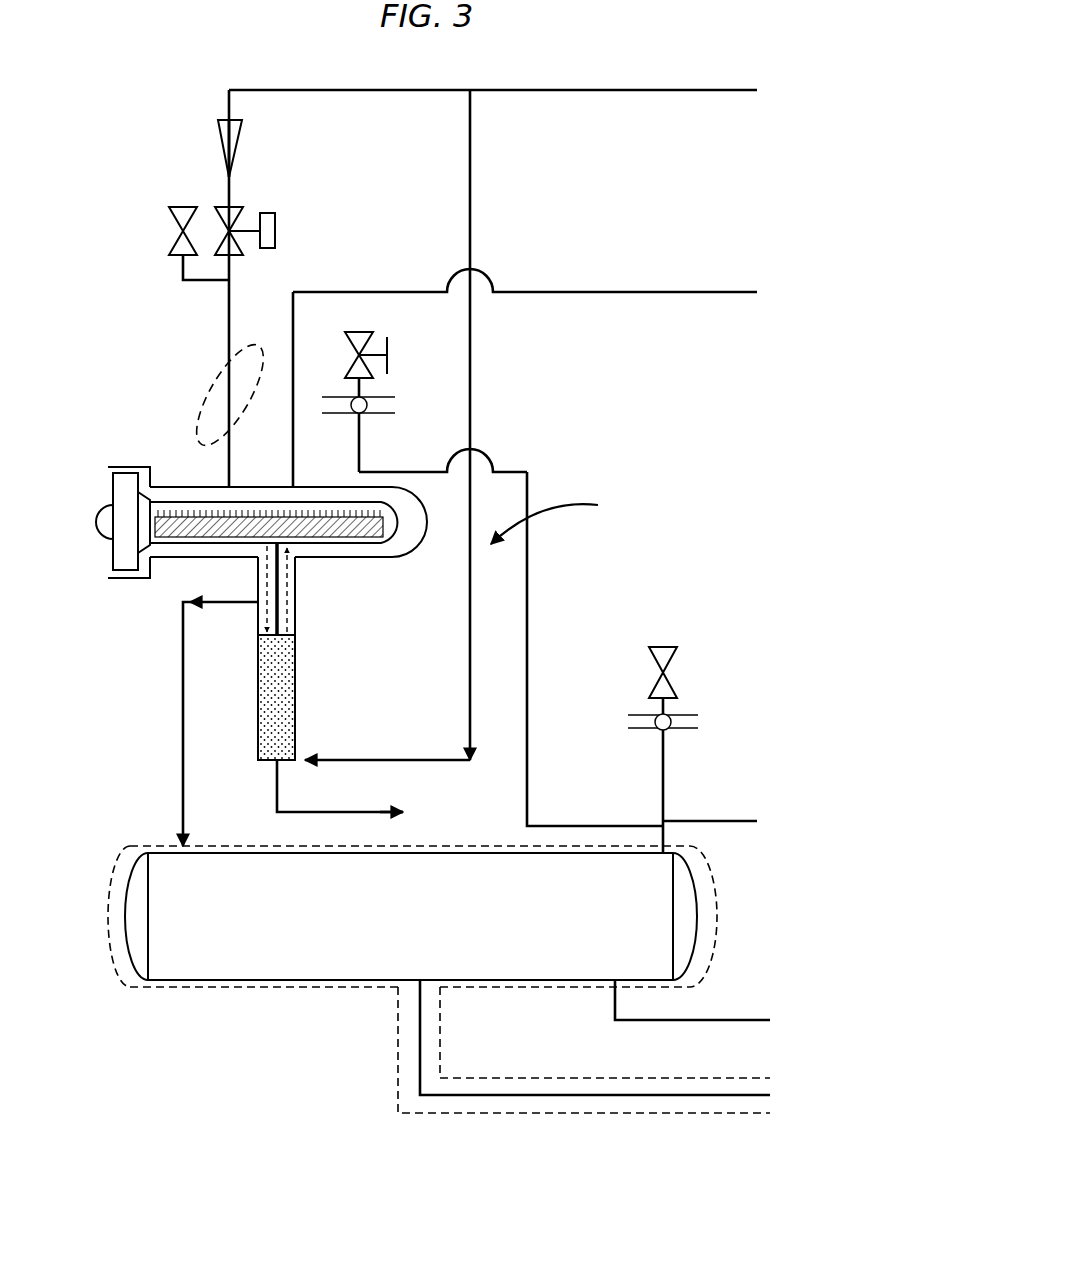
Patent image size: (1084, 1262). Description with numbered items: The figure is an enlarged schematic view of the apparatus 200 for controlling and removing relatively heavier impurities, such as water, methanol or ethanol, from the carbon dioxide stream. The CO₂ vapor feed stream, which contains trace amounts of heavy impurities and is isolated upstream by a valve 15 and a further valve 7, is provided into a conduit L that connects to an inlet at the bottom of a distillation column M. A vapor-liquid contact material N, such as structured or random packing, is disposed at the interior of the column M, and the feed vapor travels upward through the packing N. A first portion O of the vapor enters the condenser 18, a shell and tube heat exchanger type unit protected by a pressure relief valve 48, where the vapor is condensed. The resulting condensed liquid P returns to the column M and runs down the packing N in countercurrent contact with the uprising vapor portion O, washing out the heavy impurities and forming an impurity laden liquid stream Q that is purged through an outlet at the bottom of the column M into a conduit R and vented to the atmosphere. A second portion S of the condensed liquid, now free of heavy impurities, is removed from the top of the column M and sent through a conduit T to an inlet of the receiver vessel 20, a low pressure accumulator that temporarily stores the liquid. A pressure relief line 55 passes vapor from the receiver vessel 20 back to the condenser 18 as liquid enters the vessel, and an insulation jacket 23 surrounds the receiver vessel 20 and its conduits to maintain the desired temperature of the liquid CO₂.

The valve 7 is at (172, 232).
The valve 15 is at (276, 234).
The pressure relief valve 48 is at (390, 363).
The condenser 18 is at (387, 558).
The apparatus 200 is at (566, 519).
The pressure relief line 55 is at (529, 617).
The receiver vessel 20 is at (318, 966).
The insulation jacket 23 is at (200, 990).
The conduit L is at (472, 204).
The condensed liquid P is at (260, 572).
The first portion of the vapor O is at (290, 601).
The second portion of the liquid S is at (229, 606).
The conduit T is at (183, 786).
The distillation column M is at (262, 705).
The vapor-liquid contact material N is at (272, 739).
The impurity laden liquid stream Q is at (278, 800).
The conduit R is at (405, 813).